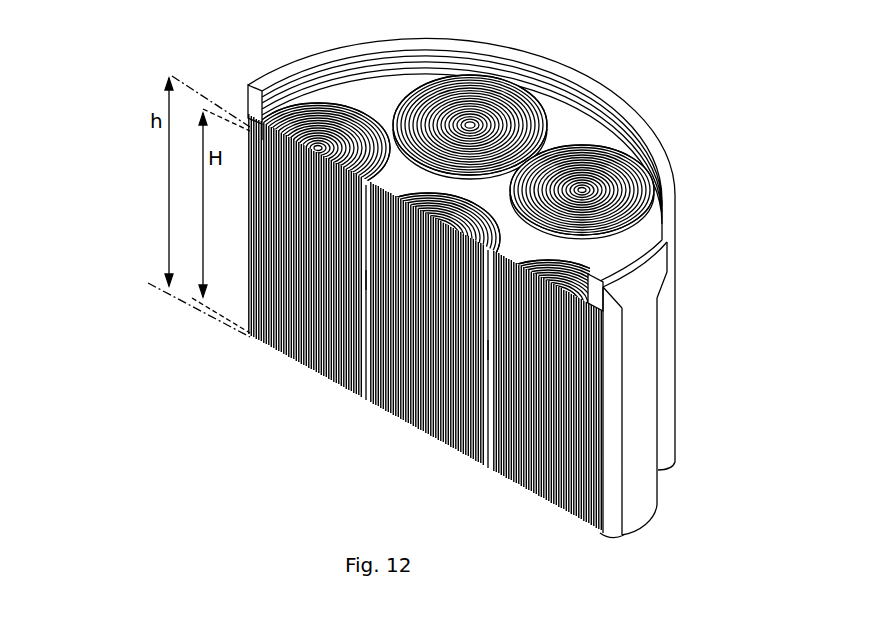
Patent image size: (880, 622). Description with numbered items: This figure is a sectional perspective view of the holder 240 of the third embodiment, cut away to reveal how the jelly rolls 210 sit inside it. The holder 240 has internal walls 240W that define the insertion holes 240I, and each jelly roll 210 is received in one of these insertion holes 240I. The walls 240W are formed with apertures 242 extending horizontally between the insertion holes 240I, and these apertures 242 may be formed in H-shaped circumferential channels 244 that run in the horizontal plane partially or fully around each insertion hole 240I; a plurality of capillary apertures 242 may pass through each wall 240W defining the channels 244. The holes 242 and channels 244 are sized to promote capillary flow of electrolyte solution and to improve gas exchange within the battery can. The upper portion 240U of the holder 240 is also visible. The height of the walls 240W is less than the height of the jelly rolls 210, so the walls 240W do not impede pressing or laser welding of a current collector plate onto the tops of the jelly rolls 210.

The jelly roll 210 is at (607, 148).
The holder 240 is at (667, 248).
The upper portion of housing 240U is at (665, 178).
The insertion hole 240I is at (388, 155).
The internal wall 240W is at (485, 413).
The aperture 242 is at (363, 280).
The channel 244 is at (487, 350).